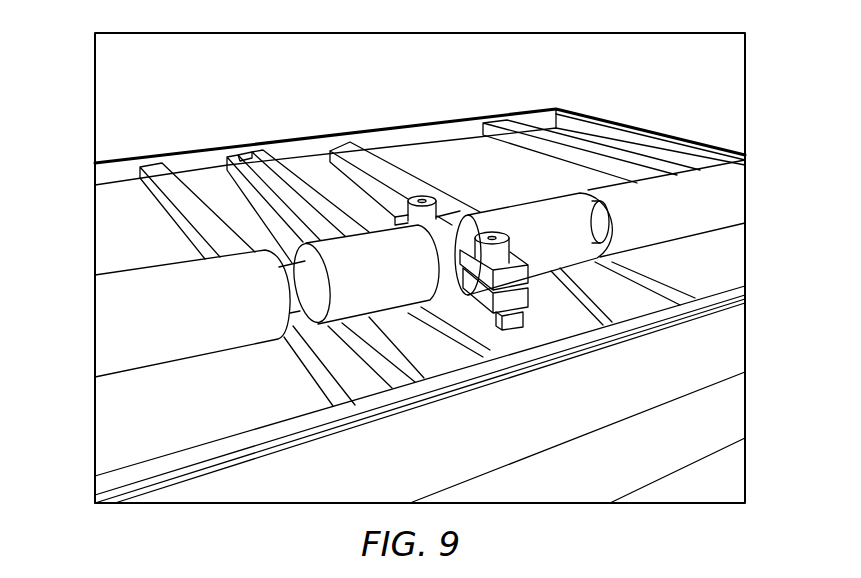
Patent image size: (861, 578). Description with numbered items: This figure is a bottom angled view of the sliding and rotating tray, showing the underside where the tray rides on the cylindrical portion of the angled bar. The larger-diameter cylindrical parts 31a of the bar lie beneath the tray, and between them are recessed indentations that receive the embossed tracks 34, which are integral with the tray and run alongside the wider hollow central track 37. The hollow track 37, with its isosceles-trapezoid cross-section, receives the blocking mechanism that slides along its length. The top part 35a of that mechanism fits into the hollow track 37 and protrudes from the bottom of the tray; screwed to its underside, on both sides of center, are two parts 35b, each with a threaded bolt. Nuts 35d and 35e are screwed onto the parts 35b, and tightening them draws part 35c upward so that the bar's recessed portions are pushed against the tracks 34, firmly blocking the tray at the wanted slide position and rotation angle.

The angled bar part 31a is at (542, 212).
The embossed track 34 is at (152, 167).
The hollow track 37 is at (264, 166).
The top part of blocking mechanism 35a is at (514, 330).
The threaded bolt part 35b is at (514, 302).
The pushing part 35c is at (522, 280).
The nut 35d is at (493, 237).
The nut 35e is at (421, 200).